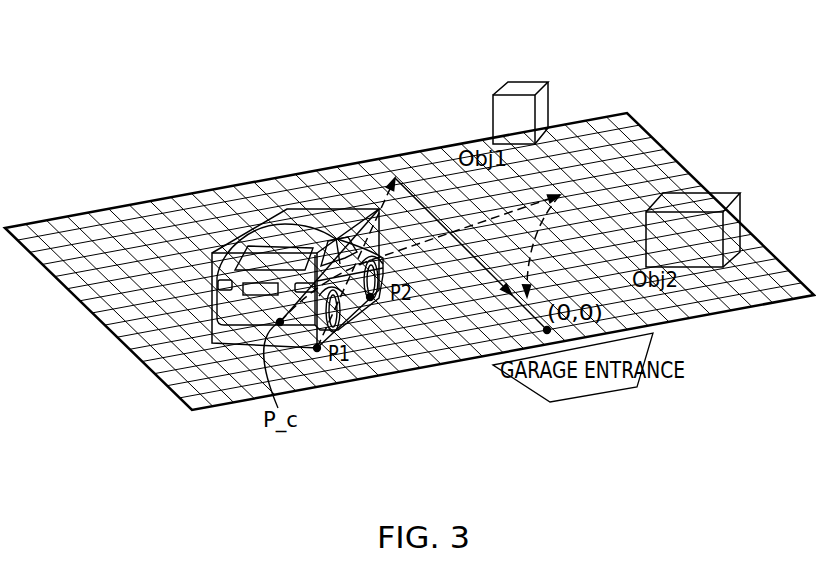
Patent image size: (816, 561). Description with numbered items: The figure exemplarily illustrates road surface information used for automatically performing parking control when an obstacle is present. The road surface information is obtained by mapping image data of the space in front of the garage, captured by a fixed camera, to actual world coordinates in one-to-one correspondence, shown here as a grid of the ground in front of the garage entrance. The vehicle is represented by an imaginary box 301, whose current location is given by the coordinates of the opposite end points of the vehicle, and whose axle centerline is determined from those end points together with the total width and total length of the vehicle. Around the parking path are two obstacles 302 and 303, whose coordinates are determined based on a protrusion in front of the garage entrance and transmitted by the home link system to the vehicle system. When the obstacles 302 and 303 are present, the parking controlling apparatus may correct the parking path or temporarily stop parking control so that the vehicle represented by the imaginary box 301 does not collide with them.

The imaginary box 301 is at (284, 208).
The obstacle 302 is at (548, 82).
The obstacle 303 is at (740, 193).